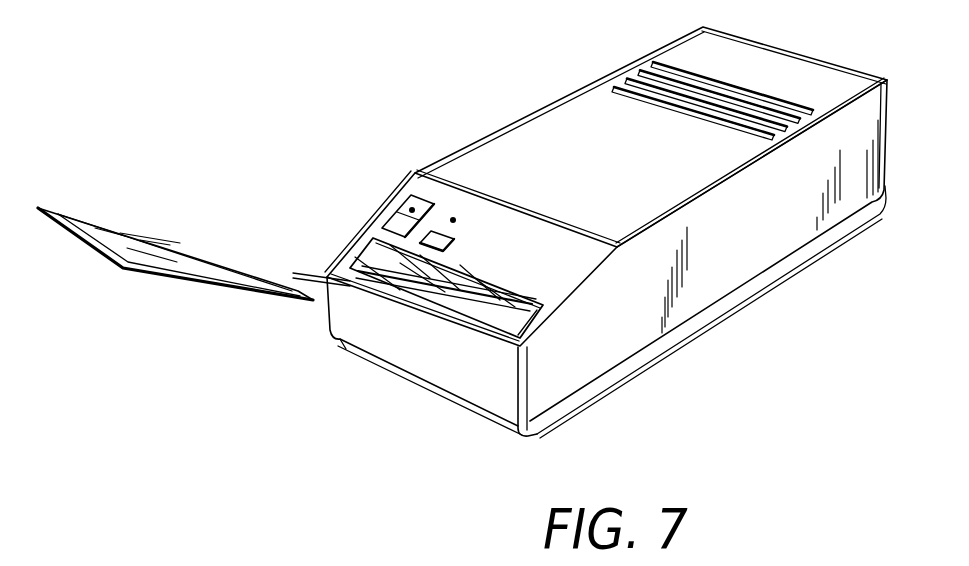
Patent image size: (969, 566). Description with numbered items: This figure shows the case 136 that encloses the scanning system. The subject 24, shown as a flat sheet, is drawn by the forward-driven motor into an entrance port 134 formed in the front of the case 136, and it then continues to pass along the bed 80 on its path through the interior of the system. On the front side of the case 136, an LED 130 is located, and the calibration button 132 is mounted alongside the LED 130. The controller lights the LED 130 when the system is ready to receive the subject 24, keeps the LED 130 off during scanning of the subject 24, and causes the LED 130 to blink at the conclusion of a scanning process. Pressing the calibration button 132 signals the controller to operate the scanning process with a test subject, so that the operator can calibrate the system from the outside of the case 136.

The subject 24 is at (186, 280).
The bed 80 is at (503, 298).
The LED 130 is at (390, 212).
The calibration button 132 is at (471, 258).
The entrance port 134 is at (442, 306).
The case 136 is at (640, 320).